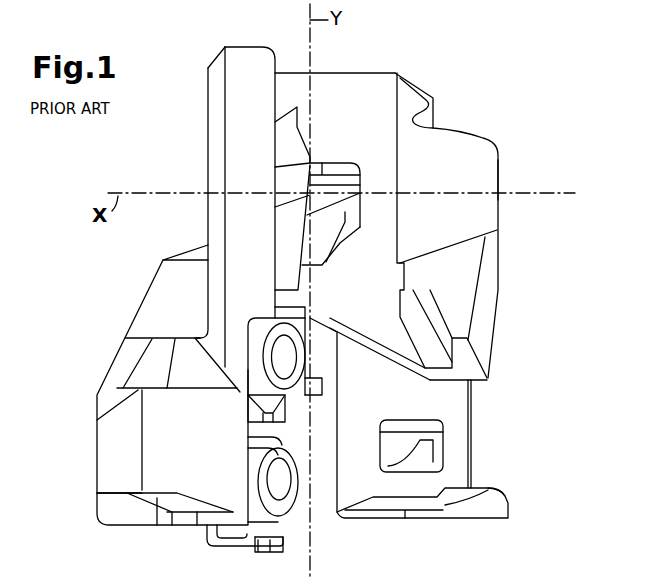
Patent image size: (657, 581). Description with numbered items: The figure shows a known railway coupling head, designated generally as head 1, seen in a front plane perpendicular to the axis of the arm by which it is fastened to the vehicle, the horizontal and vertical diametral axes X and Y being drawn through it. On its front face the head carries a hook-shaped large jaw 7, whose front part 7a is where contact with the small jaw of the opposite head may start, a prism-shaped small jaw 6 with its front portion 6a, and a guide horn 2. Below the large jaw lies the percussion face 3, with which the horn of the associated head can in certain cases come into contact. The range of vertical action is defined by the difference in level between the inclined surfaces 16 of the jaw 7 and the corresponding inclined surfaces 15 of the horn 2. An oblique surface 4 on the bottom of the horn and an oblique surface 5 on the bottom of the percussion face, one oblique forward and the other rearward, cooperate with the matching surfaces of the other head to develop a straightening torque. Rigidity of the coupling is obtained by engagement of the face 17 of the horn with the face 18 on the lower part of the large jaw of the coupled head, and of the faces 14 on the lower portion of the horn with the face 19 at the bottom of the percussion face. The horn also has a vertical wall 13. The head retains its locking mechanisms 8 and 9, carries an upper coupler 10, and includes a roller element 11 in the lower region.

The main body 1 is at (372, 277).
The guide horn 2 is at (215, 467).
The percussion face 3 is at (375, 392).
The oblique surface 4 is at (157, 499).
The oblique surface 5 is at (450, 504).
The small jaw 6 is at (258, 156).
The slider chamfer 6a is at (212, 124).
The large jaw 7 is at (448, 172).
The front part of the large jaw 7a is at (500, 170).
The locking mechanism 8 is at (290, 150).
The locking mechanism 9 is at (330, 202).
The upper coupler 10 is at (289, 368).
The lower roller 11 is at (281, 497).
The vertical wall 13 is at (118, 445).
The faces on the lower portion of the horn 14 is at (117, 483).
The inclined surfaces of the horn 15 is at (152, 370).
The inclined surfaces of the jaw 16 is at (500, 333).
The face of the horn 17 is at (186, 398).
The face on the lower part of the large jaw 18 is at (478, 384).
The face at the bottom portion of the percussion face 19 is at (489, 486).